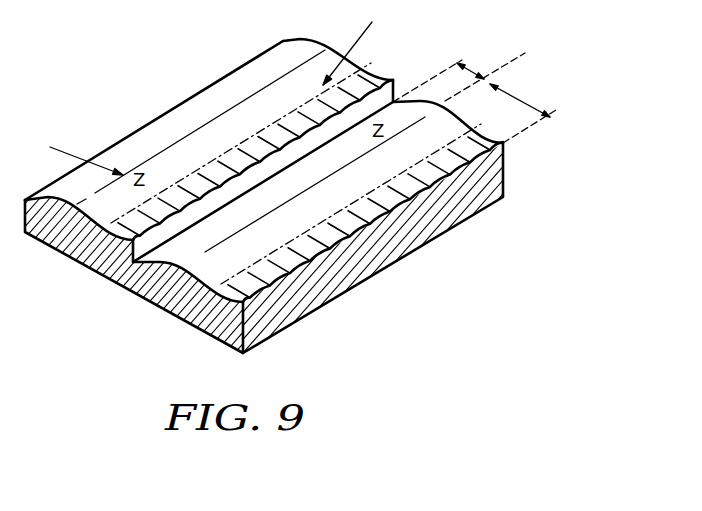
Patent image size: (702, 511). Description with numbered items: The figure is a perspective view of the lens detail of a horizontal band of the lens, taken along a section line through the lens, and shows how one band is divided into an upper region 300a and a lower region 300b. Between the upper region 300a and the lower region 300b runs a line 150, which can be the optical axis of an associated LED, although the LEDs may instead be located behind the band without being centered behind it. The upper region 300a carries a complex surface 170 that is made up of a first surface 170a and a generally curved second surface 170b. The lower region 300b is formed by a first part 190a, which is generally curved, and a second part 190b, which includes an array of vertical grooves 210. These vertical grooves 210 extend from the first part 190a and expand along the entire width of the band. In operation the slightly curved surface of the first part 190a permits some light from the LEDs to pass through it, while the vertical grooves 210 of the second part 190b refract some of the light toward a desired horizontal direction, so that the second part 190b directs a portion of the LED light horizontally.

The first surface 170a is at (135, 250).
The second surface 170b is at (143, 289).
The first part 190a is at (184, 312).
The second part 190b is at (237, 330).
The complex surface 170 is at (390, 120).
The vertical grooves 210 is at (417, 197).
The upper region 300a is at (466, 69).
The lower region 300b is at (519, 104).
The line 150 is at (502, 69).